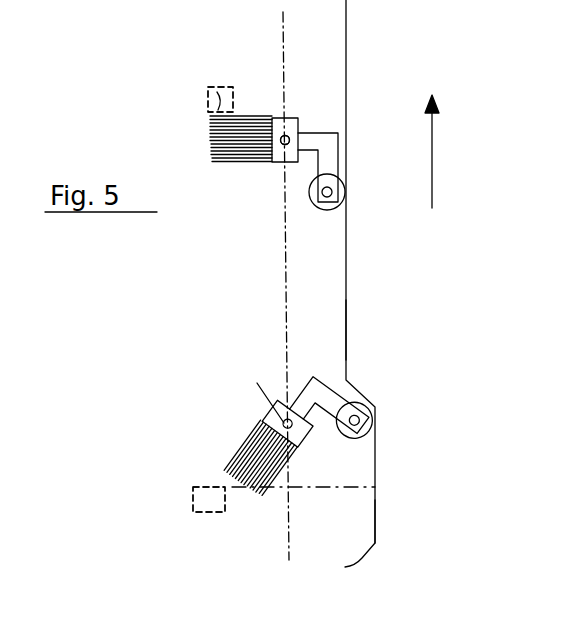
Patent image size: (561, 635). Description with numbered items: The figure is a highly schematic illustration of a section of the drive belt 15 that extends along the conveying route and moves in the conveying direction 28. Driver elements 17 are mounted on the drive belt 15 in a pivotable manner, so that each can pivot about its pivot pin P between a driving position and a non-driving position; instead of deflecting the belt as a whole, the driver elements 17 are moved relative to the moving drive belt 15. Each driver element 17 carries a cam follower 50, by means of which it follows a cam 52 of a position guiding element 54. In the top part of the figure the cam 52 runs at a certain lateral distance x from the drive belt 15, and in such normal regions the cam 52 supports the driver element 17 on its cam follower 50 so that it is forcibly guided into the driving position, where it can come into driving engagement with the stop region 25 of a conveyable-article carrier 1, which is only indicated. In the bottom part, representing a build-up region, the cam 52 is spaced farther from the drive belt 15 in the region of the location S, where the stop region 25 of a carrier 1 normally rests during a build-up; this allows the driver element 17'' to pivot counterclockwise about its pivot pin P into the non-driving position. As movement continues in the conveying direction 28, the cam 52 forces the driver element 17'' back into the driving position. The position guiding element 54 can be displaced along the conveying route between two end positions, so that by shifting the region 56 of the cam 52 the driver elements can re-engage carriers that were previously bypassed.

The conveyable-article carrier 1 is at (216, 83).
The stop region 25 is at (208, 97).
The pivot pin P is at (286, 137).
The driver element 17 is at (250, 175).
The driver element in non-driving position 17'' is at (248, 440).
The drive belt 15 is at (288, 317).
The cam follower 50 is at (323, 207).
The cam 52 is at (346, 322).
The position guiding element 54 is at (357, 57).
The region of the cam 56 is at (377, 520).
The conveying direction 28 is at (442, 168).
The location S is at (186, 532).
The lateral distance x is at (338, 7).